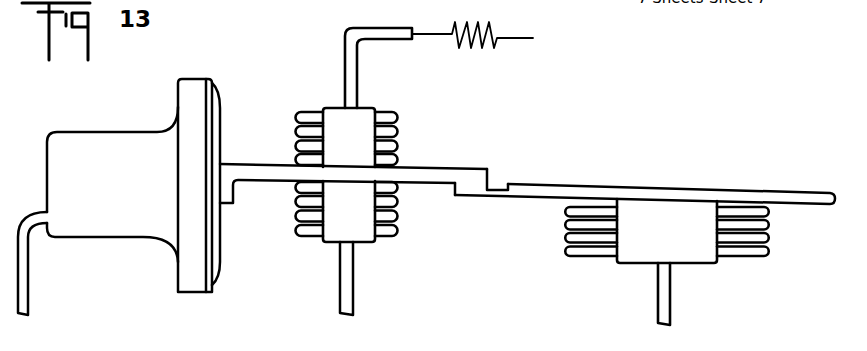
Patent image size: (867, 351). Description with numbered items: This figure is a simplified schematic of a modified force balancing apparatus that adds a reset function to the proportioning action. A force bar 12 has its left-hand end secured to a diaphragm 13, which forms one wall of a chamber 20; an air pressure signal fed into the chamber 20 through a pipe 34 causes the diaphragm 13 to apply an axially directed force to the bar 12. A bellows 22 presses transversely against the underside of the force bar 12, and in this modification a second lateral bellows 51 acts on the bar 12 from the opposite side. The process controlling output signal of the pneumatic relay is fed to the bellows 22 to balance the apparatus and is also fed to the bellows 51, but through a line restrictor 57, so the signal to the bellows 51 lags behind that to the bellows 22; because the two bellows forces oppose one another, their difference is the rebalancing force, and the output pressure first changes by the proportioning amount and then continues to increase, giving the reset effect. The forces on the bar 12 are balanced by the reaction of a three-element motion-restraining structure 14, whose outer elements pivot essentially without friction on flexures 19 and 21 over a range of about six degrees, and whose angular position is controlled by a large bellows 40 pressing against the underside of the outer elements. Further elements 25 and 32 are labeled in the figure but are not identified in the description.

The force bar 12 is at (264, 170).
The diaphragm 13 is at (221, 244).
The motion-restraining structure 14 is at (735, 186).
The flexure 19 is at (524, 174).
The chamber 20 is at (66, 138).
The flexure 21 is at (524, 174).
The bellows 22 is at (397, 206).
The junction 25 is at (499, 188).
The lead 32 is at (354, 288).
The pipe 34 is at (26, 280).
The large bellows 40 is at (768, 232).
The second lateral bellows 51 is at (398, 133).
The line restrictor 57 is at (502, 46).